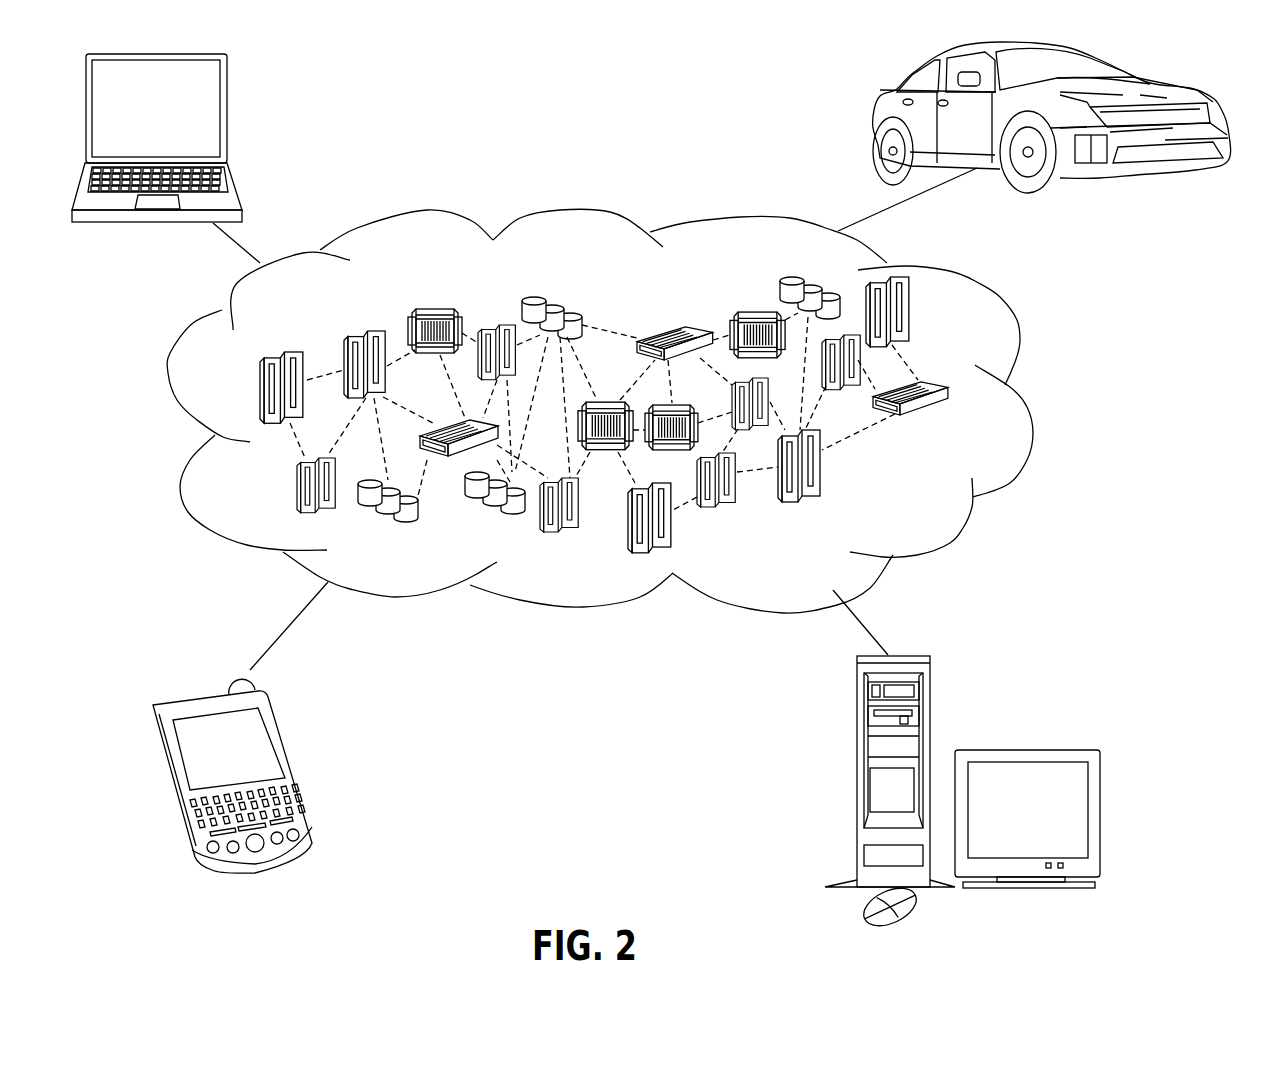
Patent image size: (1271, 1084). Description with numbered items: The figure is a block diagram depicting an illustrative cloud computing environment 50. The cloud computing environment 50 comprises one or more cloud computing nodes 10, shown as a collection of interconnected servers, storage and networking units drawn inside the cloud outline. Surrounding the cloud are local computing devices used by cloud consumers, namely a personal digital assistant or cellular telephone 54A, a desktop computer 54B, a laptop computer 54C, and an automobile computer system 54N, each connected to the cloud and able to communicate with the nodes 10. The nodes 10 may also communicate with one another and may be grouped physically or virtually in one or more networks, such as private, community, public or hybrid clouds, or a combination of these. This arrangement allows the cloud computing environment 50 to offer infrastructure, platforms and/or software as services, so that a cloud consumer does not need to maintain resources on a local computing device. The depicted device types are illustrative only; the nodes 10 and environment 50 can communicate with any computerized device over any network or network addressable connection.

The cloud computing node 10 is at (945, 510).
The cloud computing environment 50 is at (1025, 405).
The personal digital assistant (PDA) or cellular telephone 54A is at (283, 732).
The desktop computer 54B is at (856, 717).
The laptop computer 54C is at (228, 92).
The automobile computer system 54N is at (877, 109).